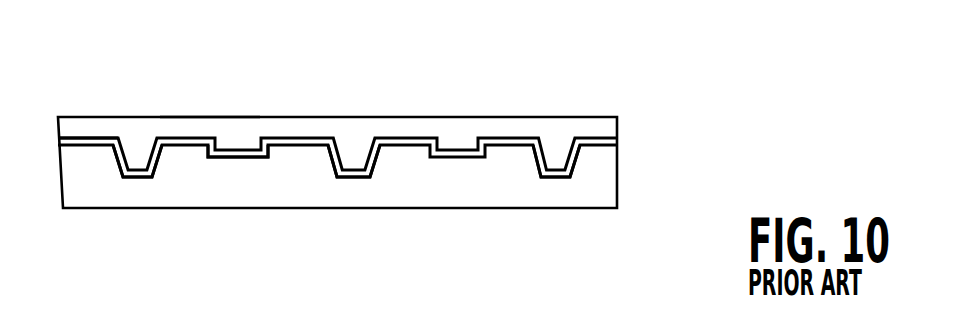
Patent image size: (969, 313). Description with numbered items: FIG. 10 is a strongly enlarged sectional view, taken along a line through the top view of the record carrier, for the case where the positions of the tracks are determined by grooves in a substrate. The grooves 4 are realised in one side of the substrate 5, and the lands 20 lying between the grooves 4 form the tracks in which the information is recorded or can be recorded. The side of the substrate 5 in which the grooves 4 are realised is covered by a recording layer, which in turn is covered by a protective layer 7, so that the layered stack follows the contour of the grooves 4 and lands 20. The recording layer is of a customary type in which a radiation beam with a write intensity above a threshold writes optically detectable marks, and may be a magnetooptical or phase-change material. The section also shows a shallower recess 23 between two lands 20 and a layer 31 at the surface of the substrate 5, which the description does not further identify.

The groove 4 is at (143, 163).
The substrate 5 is at (143, 190).
The protective layer 7 is at (202, 128).
The land 20 is at (408, 137).
The recess 23 is at (233, 142).
The insulating layer 31 is at (77, 142).